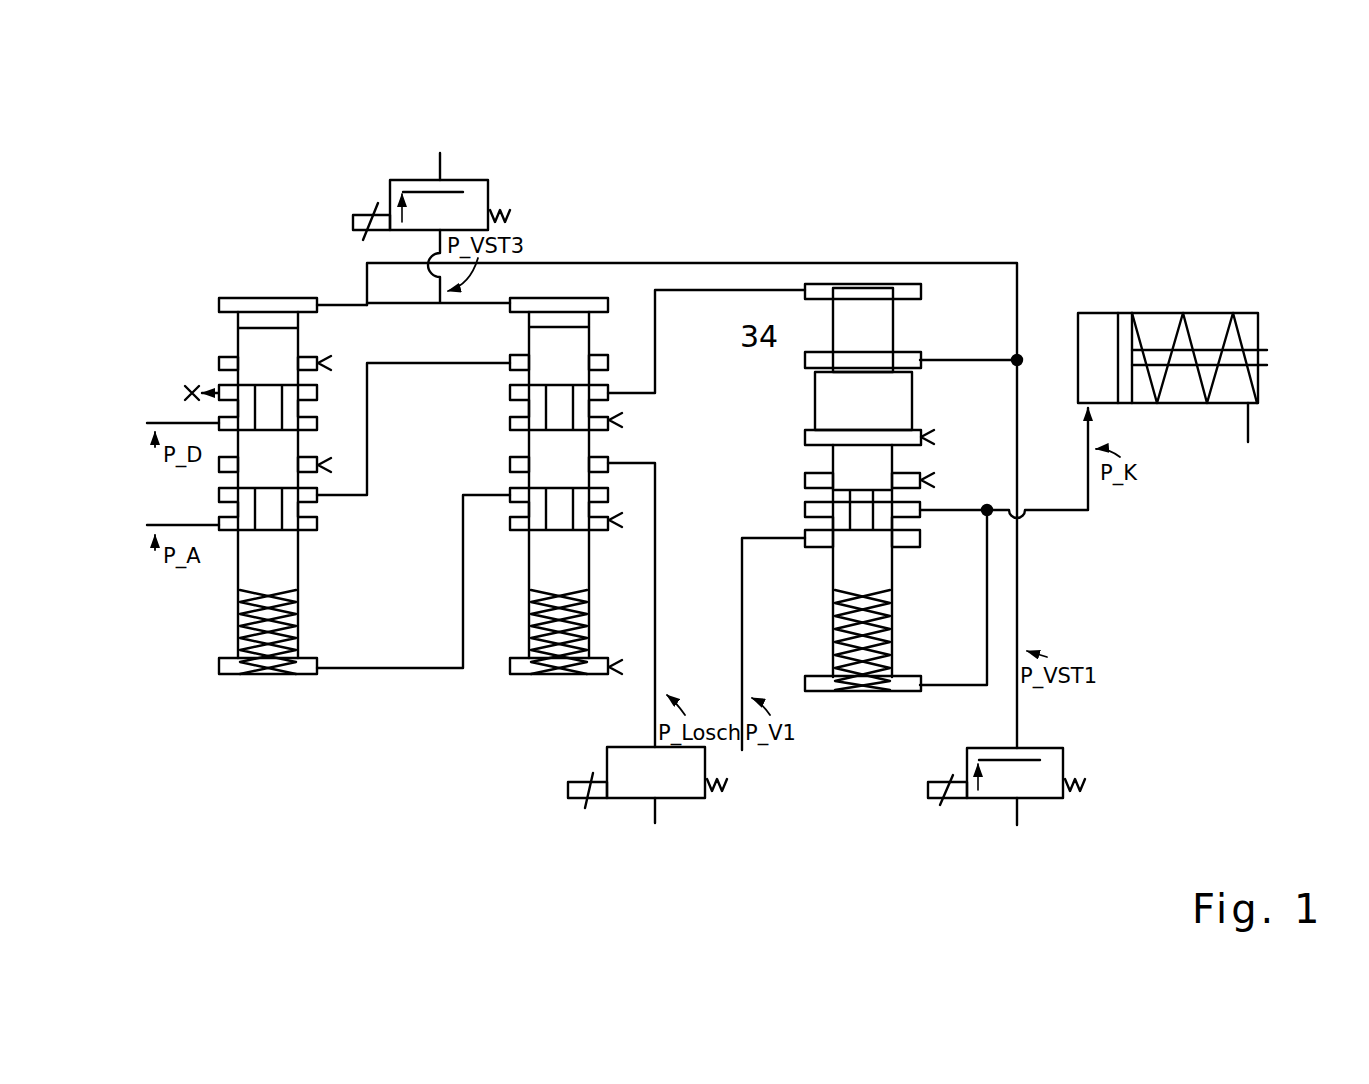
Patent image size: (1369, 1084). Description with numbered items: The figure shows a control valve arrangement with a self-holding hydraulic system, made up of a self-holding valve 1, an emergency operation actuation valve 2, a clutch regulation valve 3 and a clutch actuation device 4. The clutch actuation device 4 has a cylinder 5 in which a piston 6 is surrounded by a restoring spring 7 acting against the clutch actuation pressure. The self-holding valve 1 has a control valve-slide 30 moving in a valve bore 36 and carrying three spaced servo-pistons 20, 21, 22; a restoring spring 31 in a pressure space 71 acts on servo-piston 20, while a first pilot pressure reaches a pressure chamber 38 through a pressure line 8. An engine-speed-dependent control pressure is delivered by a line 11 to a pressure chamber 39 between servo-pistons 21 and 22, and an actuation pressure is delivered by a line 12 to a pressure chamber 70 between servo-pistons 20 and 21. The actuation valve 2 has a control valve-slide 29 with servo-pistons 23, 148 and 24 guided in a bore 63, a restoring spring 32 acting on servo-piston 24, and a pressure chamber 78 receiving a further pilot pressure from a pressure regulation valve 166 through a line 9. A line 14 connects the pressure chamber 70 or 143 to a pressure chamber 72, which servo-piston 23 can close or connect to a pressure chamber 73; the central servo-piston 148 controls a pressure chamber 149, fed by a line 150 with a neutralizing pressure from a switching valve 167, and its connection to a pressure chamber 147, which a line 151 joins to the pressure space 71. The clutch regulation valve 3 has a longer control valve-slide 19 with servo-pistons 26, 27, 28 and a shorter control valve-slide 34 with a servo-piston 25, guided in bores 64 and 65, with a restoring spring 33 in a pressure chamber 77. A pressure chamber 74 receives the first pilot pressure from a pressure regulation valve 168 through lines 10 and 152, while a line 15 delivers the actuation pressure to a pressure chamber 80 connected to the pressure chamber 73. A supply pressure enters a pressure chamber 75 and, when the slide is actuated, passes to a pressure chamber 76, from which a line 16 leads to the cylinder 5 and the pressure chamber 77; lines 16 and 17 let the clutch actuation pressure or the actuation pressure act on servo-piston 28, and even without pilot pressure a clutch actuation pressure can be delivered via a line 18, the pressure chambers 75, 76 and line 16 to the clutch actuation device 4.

The self-holding valve 1 is at (184, 706).
The emergency operation actuation valve 2 is at (545, 702).
The clutch regulation valve 3 is at (861, 707).
The clutch actuation device 4 is at (1275, 358).
The cylinder 5 is at (1215, 313).
The piston 6 is at (1130, 325).
The restoring spring 7 is at (1240, 333).
The pressure line 8 is at (513, 363).
The line 9 is at (514, 388).
The line 10 is at (962, 356).
The line 11 is at (180, 423).
The line 12 is at (150, 526).
The line 14 is at (370, 447).
The line 15 is at (657, 340).
The line 16 is at (1050, 512).
The line 17 is at (953, 685).
The line 18 is at (760, 675).
The control valve-slide 19 is at (820, 572).
The servo-piston 20 is at (157, 548).
The servo-piston 21 is at (300, 428).
The servo-piston 22 is at (250, 335).
The servo-piston 23 is at (570, 347).
The servo-piston 24 is at (573, 552).
The servo-piston 25 is at (860, 316).
The servo-piston 26 is at (890, 393).
The servo-piston 27 is at (862, 462).
The servo-piston 28 is at (873, 553).
The control valve-slide 29 is at (515, 552).
The control valve-slide 30 is at (314, 561).
The restoring spring 31 is at (252, 542).
The restoring spring 32 is at (567, 675).
The restoring spring 33 is at (893, 617).
The control valve-slide 34 is at (819, 317).
The valve bore 36 is at (242, 610).
The pressure chamber 38 is at (228, 303).
The pressure chamber 39 is at (273, 455).
The bore 63 is at (547, 308).
The bore 64 is at (893, 598).
The bore 65 is at (890, 338).
The pressure chamber 70 is at (218, 491).
The pressure space 71 is at (234, 668).
The pressure chamber 72 is at (365, 303).
The pressure chamber 73 is at (514, 395).
The pressure chamber 74 is at (805, 363).
The pressure chamber 75 is at (906, 540).
The pressure chamber 76 is at (905, 510).
The pressure chamber 77 is at (918, 692).
The pressure chamber 78 is at (590, 327).
The pressure chamber 80 is at (822, 299).
The pressure chamber 143 is at (218, 525).
The pressure chamber 147 is at (523, 443).
The servo-piston 148 is at (520, 493).
The pressure chamber 149 is at (607, 462).
The line 150 is at (742, 750).
The line 151 is at (350, 668).
The line 152 is at (1020, 737).
The pressure regulation valve 166 is at (398, 180).
The switching valve 167 is at (643, 773).
The pressure regulation valve 168 is at (1063, 767).